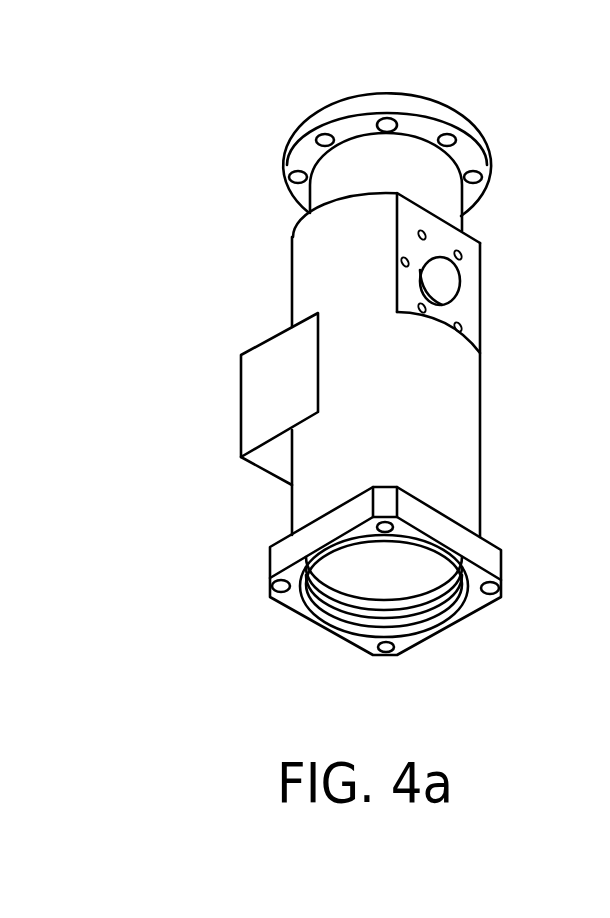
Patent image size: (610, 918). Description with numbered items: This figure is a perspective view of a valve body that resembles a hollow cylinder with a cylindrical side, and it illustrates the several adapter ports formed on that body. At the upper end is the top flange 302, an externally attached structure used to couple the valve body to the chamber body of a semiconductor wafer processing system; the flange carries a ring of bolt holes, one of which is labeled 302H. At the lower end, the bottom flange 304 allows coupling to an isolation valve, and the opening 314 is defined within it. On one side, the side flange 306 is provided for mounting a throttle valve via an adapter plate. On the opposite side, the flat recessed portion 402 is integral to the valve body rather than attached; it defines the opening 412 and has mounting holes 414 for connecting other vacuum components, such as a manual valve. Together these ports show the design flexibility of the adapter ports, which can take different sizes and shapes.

The top flange 302 is at (462, 125).
The flange bolt hole 302H is at (481, 180).
The recessed portion 402 is at (478, 250).
The mounting holes 414 is at (478, 303).
The opening 412 is at (448, 299).
The side flange 306 is at (253, 371).
The bottom flange 304 is at (290, 597).
The opening 314 is at (403, 572).